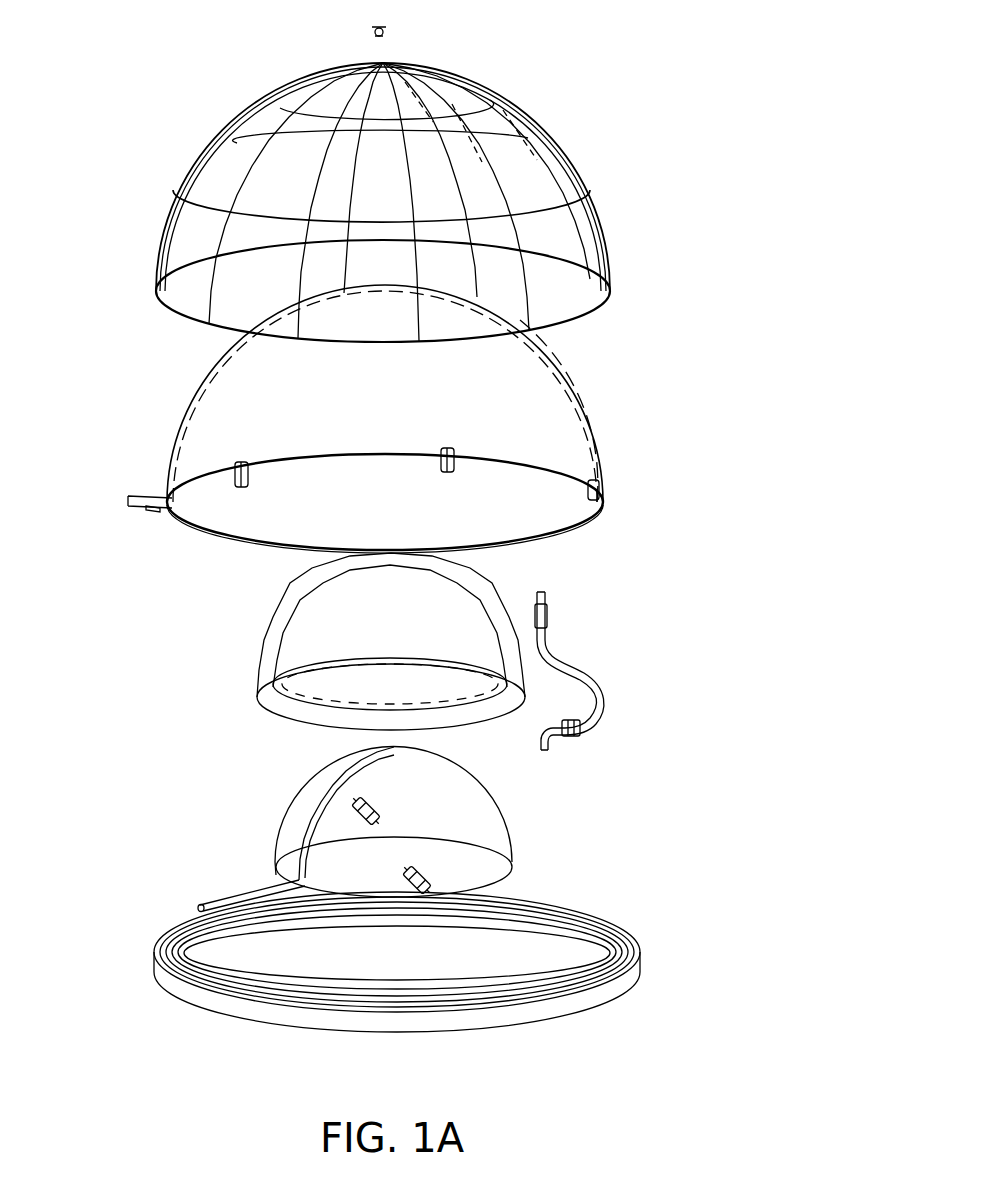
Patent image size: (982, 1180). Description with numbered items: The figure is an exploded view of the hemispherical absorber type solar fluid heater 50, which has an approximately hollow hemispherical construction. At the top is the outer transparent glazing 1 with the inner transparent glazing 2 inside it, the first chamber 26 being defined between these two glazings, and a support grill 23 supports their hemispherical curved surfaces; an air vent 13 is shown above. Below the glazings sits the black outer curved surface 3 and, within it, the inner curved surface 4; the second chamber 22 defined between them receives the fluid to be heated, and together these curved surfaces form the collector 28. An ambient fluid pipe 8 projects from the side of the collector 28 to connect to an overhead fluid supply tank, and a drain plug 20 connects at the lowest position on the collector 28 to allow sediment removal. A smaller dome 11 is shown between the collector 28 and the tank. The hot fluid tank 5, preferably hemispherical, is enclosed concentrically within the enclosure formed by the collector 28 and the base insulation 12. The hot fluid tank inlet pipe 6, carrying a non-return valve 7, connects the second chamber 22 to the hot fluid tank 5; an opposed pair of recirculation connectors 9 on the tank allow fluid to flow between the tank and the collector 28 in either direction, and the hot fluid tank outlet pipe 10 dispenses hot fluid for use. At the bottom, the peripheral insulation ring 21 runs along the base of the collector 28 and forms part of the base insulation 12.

The hemispherical absorber type solar fluid heater 50 is at (96, 53).
The outer transparent glazing 1 is at (539, 118).
The inner transparent glazing 2 is at (597, 197).
The support grill 23 is at (524, 272).
The first chamber 26 is at (178, 190).
The air vent 13 is at (400, 30).
The black outer curved surface 3 is at (194, 388).
The second chamber 22 is at (222, 356).
The collector 28 is at (592, 399).
The inner curved surface 4 is at (176, 462).
The ambient fluid pipe 8 is at (126, 498).
The drain plug 20 is at (151, 511).
The inner dome 11 is at (265, 627).
The hot fluid tank inlet pipe 6 is at (602, 688).
The non-return valve 7 is at (584, 729).
The hot fluid tank 5 is at (277, 826).
The recirculation connectors 9 is at (404, 868).
The hot fluid tank outlet pipe 10 is at (198, 905).
The peripheral insulation ring 21 is at (607, 923).
The base insulation 12 is at (160, 990).